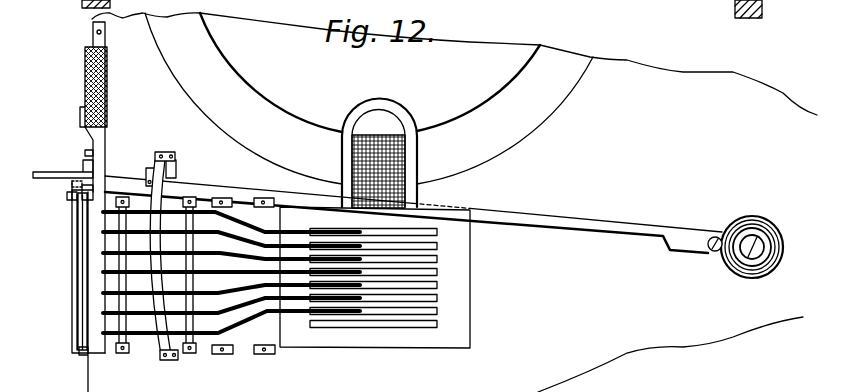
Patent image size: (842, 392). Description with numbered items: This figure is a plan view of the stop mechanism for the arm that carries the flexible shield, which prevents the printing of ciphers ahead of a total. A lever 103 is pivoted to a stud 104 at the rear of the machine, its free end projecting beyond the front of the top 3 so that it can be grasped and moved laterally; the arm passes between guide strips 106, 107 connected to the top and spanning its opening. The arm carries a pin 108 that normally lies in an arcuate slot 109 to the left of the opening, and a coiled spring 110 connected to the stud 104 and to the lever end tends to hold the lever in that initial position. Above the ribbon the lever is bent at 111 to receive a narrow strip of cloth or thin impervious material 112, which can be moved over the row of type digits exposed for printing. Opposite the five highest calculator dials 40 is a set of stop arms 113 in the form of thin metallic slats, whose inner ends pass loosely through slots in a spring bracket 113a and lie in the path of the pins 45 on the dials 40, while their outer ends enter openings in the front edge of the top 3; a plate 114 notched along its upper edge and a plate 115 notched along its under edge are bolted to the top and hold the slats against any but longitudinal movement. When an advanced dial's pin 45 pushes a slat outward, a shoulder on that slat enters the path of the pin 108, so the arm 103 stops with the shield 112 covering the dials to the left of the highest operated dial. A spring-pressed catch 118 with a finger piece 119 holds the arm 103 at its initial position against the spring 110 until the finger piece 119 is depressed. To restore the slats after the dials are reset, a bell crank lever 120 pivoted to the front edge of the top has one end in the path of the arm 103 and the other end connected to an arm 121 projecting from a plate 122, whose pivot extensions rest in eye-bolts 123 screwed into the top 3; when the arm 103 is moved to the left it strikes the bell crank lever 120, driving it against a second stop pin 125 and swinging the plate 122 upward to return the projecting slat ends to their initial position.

The top 3 is at (617, 75).
The calculator dials 40 is at (437, 286).
The pins 45 is at (362, 321).
The lever 103 is at (550, 223).
The stud 104 is at (747, 230).
The guide strip 106 is at (155, 156).
The guide strip 107 is at (177, 172).
The pin 108 is at (175, 161).
The arcuate slot 109 is at (149, 180).
The coiled spring 110 is at (768, 230).
The bend 111 is at (419, 172).
The shield strip 112 is at (350, 162).
The stop arms 113 is at (227, 222).
The spring bracket 113a is at (277, 334).
The plate 114 is at (190, 283).
The plate 115 is at (135, 275).
The catch 118 is at (98, 168).
The finger piece 119 is at (107, 83).
The bell crank lever 120 is at (83, 165).
The arm 121 is at (70, 197).
The plate 122 is at (78, 298).
The eye-bolts 123 is at (80, 353).
The second stop pin 125 is at (86, 152).